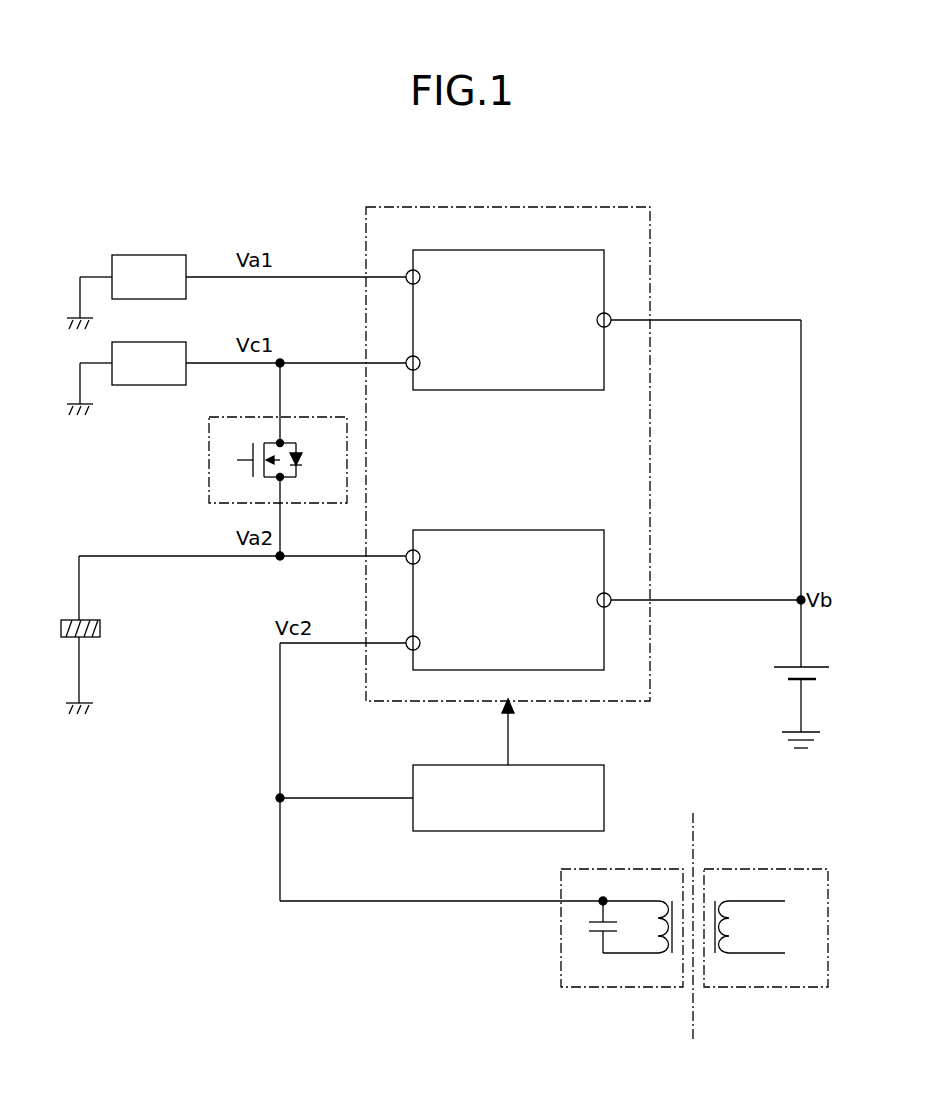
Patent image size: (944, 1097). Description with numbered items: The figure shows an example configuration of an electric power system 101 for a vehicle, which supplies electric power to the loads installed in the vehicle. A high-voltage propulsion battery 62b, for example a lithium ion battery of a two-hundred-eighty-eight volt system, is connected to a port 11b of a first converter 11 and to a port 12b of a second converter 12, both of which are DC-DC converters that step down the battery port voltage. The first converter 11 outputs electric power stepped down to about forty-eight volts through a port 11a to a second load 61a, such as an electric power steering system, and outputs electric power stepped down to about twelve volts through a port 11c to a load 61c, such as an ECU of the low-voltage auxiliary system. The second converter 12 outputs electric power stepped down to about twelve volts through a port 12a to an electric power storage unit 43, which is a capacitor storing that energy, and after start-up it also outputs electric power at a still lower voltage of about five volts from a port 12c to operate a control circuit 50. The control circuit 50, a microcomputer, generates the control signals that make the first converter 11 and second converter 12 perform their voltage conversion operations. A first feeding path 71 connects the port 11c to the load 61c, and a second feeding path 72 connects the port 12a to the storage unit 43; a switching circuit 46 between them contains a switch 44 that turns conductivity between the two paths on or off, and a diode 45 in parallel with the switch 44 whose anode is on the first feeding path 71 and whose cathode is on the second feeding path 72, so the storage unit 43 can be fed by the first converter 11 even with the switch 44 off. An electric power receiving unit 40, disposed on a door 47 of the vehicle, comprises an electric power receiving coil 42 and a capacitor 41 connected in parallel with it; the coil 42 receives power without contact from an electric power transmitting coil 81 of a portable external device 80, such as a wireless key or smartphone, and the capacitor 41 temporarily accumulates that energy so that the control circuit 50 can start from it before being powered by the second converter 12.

The electric power system 101 is at (93, 177).
The first converter 11 is at (510, 305).
The port of the first converter 11a is at (411, 271).
The port of the first converter 11b is at (606, 313).
The port of the first converter 11c is at (411, 357).
The second converter 12 is at (510, 585).
The port of the second converter 12a is at (411, 551).
The port of the second converter 12b is at (606, 593).
The port of the second converter 12c is at (411, 637).
The electric power receiving unit 40 is at (481, 914).
The capacitor 41 is at (601, 934).
The electric power receiving coil 42 is at (658, 953).
The electric power storage unit 43 is at (92, 620).
The switch 44 is at (252, 472).
The diode 45 is at (301, 462).
The switching circuit 46 is at (277, 459).
The door 47 is at (694, 1016).
The control circuit 50 is at (550, 765).
The second load 61a is at (150, 255).
The load 61c is at (150, 342).
The battery 62b is at (812, 667).
The first feeding path 71 is at (304, 362).
The second feeding path 72 is at (305, 555).
The external device 80 is at (766, 914).
The electric power transmitting coil 81 is at (729, 953).